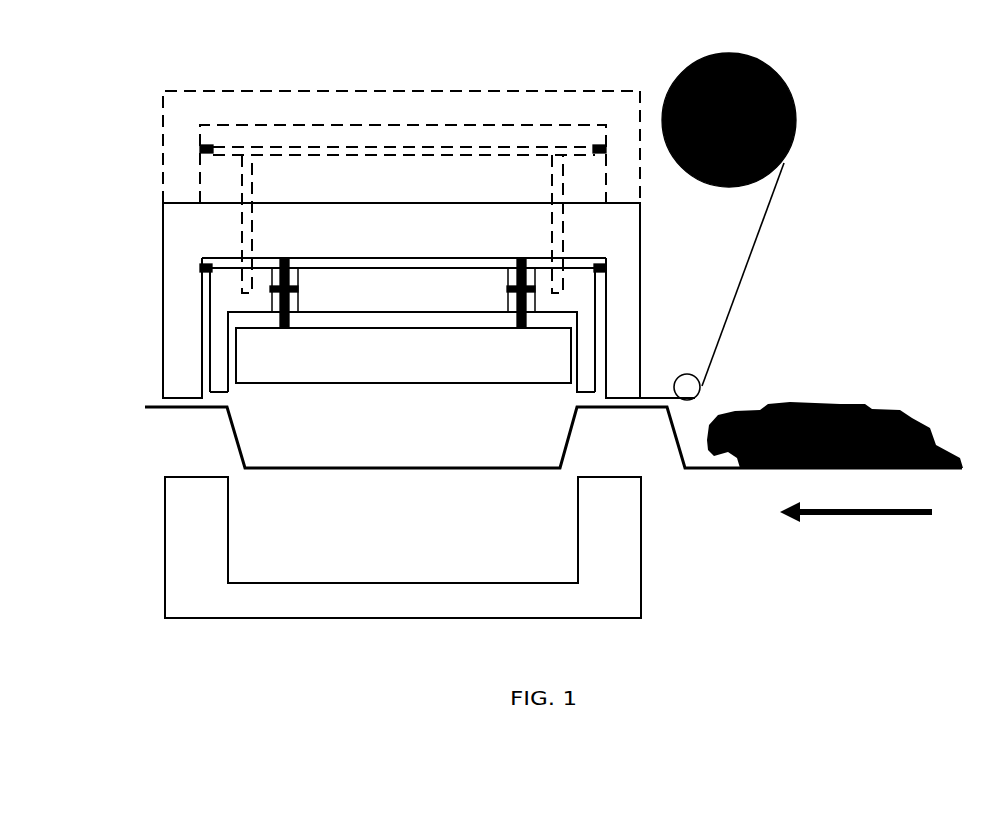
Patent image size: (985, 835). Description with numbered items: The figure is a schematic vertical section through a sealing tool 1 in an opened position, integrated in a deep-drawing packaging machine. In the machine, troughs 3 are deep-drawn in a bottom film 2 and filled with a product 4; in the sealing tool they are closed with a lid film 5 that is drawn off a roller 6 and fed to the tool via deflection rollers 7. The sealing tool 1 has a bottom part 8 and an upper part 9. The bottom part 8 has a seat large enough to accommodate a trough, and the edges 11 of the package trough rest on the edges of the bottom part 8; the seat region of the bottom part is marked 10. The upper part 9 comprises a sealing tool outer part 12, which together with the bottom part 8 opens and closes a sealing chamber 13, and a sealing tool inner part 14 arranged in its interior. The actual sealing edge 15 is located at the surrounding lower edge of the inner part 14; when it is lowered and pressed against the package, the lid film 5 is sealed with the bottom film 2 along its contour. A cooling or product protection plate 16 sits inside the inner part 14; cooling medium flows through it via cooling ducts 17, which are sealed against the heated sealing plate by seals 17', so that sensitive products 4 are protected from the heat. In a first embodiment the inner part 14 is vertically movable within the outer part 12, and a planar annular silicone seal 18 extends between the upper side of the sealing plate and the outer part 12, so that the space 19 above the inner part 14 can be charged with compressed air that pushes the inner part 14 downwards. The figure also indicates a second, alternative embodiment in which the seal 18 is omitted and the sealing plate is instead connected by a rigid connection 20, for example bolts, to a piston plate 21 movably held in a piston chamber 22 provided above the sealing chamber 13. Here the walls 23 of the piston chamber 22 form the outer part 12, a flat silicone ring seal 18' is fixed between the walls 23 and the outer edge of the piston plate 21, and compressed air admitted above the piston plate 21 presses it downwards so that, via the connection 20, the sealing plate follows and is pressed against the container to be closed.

The sealing tool 1 is at (127, 87).
The bottom film 2 is at (702, 469).
The troughs 3 is at (692, 442).
The product 4 is at (857, 410).
The lid film 5 is at (751, 270).
The roller 6 is at (781, 73).
The deflection rollers 7 is at (683, 375).
The bottom part 8 is at (178, 566).
The upper part 9 is at (150, 291).
The support body 10 is at (418, 546).
The edges 11 is at (605, 408).
The sealing tool outer part 12 is at (172, 322).
The sealing chamber 13 is at (250, 397).
The sealing tool inner part 14 is at (218, 348).
The sealing edge 15 is at (218, 390).
The cooling or product protection plate 16 is at (416, 364).
The cooling ducts 17 is at (403, 293).
The seals 17' is at (402, 279).
The seal 18 is at (363, 324).
The seal 18' is at (363, 153).
The space 19 is at (378, 258).
The rigid connection 20 is at (253, 229).
The piston plate 21 is at (348, 146).
The piston chamber 22 is at (423, 103).
The walls 23 is at (178, 182).